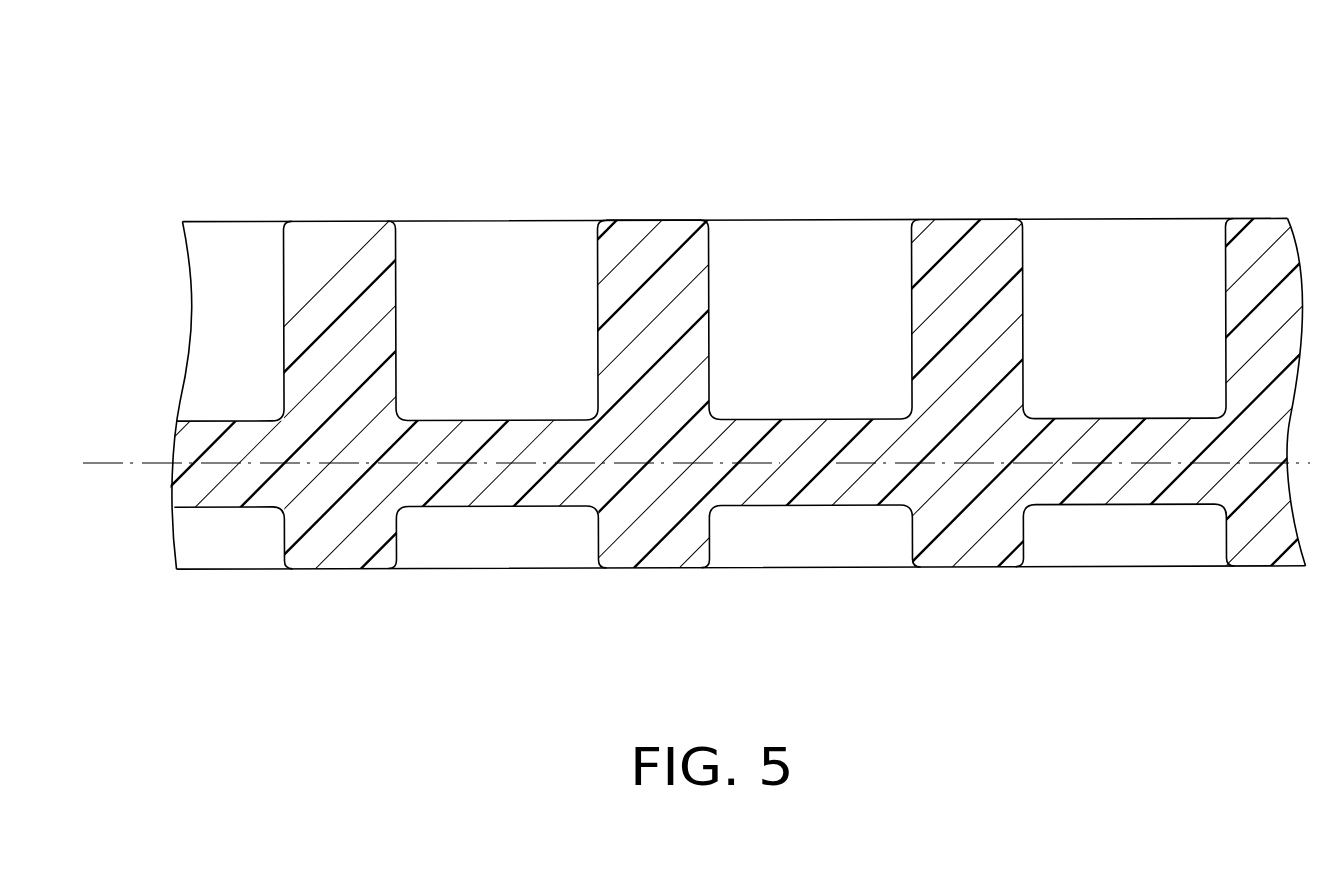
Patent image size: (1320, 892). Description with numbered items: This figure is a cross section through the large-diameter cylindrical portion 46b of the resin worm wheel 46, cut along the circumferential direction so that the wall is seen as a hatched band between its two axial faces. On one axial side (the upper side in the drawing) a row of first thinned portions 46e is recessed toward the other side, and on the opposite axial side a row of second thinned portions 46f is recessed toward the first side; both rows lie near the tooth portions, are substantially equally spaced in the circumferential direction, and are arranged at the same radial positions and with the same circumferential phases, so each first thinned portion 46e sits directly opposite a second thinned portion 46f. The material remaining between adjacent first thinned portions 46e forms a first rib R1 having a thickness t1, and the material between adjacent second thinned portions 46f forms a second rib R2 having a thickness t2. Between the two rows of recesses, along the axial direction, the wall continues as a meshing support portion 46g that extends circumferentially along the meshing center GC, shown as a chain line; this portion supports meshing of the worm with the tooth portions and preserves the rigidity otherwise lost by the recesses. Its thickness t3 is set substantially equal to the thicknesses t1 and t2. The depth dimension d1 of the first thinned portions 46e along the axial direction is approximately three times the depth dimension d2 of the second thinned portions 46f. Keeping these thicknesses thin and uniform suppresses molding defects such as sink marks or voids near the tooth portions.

The worm wheel 46 is at (382, 190).
The large-diameter cylindrical portion 46b is at (680, 218).
The first thinned portions 46e is at (257, 336).
The second thinned portions 46f is at (246, 553).
The meshing support portion 46g is at (785, 475).
The first rib R1 is at (353, 317).
The second rib R2 is at (356, 548).
The meshing center GC is at (123, 463).
The thickness of first rib t1 is at (1090, 156).
The thickness of second rib t2 is at (777, 640).
The thickness of meshing support portion t3 is at (456, 352).
The depth dimension of first thinned portions d1 is at (1093, 657).
The depth dimension of second thinned portions d2 is at (1077, 563).